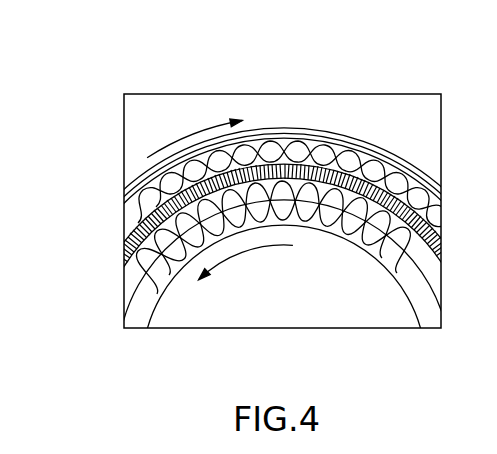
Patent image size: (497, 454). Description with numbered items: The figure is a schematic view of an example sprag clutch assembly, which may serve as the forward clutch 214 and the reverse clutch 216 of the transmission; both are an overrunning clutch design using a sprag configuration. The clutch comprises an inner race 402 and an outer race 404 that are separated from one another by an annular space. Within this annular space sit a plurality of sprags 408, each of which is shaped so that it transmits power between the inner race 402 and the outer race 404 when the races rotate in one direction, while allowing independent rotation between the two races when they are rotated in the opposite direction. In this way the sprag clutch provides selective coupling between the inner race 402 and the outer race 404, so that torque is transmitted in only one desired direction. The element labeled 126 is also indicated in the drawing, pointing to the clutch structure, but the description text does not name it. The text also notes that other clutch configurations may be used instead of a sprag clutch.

The forward clutch 214 is at (282, 170).
The reverse clutch 216 is at (343, 67).
The wheel assembly 126 is at (121, 240).
The inner race 402 is at (349, 245).
The outer race 404 is at (342, 138).
The sprags 408 is at (387, 180).